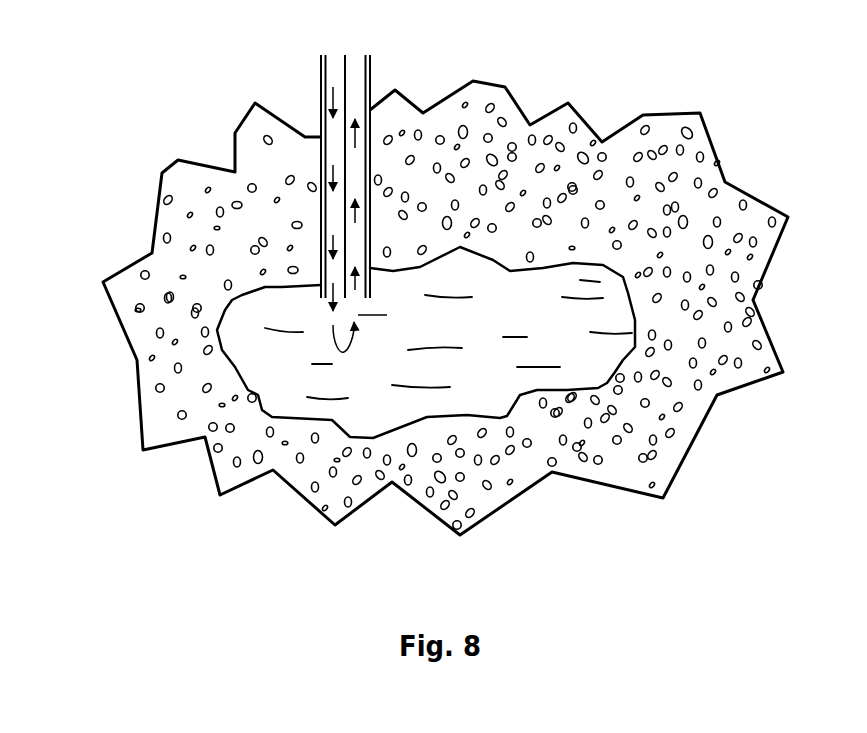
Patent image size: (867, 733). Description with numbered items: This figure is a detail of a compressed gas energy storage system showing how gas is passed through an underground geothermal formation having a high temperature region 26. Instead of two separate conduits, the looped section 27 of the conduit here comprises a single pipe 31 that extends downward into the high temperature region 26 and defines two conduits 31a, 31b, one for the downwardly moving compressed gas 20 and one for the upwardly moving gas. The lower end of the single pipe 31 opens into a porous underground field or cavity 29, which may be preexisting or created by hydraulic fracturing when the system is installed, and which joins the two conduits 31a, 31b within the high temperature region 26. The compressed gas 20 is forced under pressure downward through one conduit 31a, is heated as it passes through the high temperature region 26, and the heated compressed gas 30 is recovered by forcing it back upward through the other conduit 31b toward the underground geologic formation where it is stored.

The compressed gas 20 is at (327, 193).
The high temperature region 26 is at (785, 233).
The looped section 27 is at (428, 418).
The porous underground field or cavity 29 is at (495, 386).
The heated compressed gas 30 is at (362, 127).
The single pipe 31 is at (321, 80).
The conduit 31a is at (332, 73).
The conduit 31b is at (358, 73).